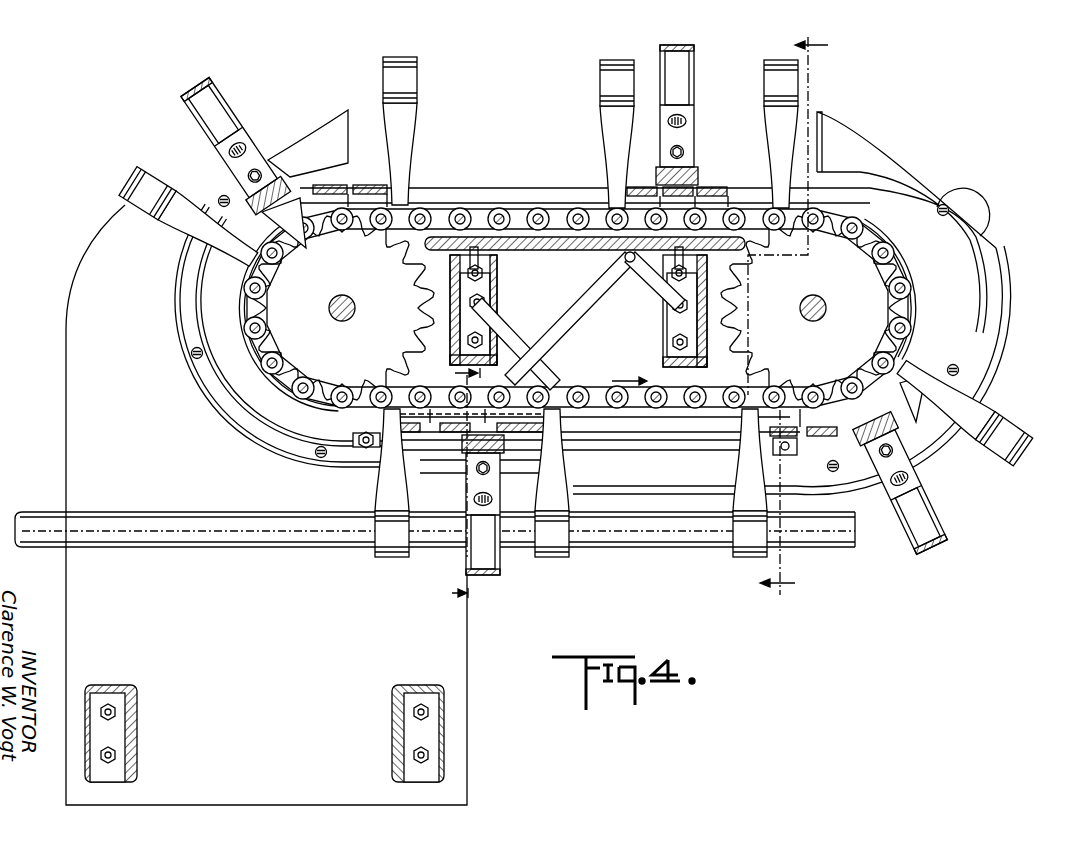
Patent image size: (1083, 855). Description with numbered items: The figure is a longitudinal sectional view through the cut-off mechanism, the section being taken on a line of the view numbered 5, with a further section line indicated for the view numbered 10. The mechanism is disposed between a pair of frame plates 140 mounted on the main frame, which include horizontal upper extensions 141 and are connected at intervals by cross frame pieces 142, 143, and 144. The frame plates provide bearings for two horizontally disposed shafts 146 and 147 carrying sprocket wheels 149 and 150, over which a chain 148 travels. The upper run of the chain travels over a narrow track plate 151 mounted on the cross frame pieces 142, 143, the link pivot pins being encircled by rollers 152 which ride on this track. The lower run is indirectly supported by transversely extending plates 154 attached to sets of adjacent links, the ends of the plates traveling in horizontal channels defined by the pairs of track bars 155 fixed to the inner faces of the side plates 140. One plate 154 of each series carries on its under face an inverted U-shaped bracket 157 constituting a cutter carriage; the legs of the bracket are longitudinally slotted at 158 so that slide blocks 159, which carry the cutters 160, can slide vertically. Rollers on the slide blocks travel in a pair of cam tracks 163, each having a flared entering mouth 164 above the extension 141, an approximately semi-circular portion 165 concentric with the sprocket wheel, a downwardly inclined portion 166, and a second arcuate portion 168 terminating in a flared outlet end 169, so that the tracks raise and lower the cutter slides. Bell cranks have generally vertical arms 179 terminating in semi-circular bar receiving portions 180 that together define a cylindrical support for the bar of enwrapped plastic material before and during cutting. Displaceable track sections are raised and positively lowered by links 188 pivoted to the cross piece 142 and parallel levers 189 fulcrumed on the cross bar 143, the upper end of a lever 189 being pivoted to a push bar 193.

The frame plate 140 is at (450, 643).
The upper extension 141 is at (983, 224).
The cross frame piece 142 is at (490, 285).
The cross frame piece 143 is at (665, 325).
The cross frame piece 144 is at (137, 712).
The shaft 146 is at (329, 305).
The shaft 147 is at (820, 300).
The chain 148 is at (528, 210).
The sprocket wheel 149 is at (318, 362).
The sprocket wheel 150 is at (866, 303).
The track plate 151 is at (556, 250).
The roller 152 is at (472, 207).
The plate 154 is at (355, 183).
The trackway 155 is at (677, 430).
The inverted U-shaped bracket 157 is at (210, 82).
The slot 158 is at (212, 102).
The slide block 159 is at (250, 150).
The cutter 160 is at (233, 150).
The cam track 163 is at (207, 408).
The flared entering mouth 164 is at (331, 130).
The semi-circular portion 165 is at (186, 302).
The inclined track portion 166 is at (440, 493).
The arcuate portion 168 is at (1003, 326).
The flared outlet end 169 is at (843, 145).
The arm 179 is at (405, 140).
The bar receiving portion 180 is at (412, 88).
The link 188 is at (503, 330).
The lever 189 is at (647, 280).
The push bar 193 is at (567, 315).
The section line 5 is at (795, 316).
The section line 10 is at (468, 490).